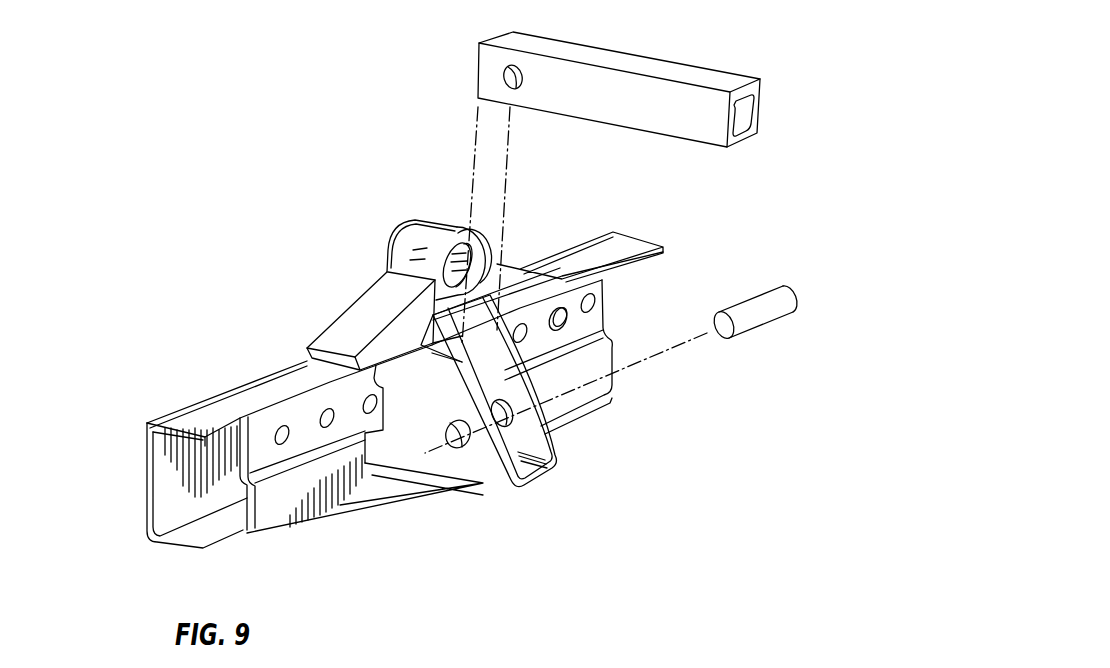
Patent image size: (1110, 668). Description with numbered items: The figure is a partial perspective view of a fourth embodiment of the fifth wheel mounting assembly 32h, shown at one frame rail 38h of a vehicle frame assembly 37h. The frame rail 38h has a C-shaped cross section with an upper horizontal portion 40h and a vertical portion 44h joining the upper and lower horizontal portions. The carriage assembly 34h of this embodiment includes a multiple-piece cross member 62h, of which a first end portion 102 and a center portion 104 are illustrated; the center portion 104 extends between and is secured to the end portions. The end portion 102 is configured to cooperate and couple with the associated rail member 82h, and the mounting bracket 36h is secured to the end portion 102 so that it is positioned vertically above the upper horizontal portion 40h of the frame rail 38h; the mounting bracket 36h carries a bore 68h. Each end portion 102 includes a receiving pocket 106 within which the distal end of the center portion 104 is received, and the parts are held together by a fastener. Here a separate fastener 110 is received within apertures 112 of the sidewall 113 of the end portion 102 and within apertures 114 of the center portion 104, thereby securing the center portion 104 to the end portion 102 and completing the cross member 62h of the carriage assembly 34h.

The fifth wheel mounting assembly 32h is at (270, 245).
The carriage assembly 34h is at (452, 462).
The mounting bracket 36h is at (440, 271).
The vehicle frame assembly 37h is at (203, 386).
The frame rail 38h is at (365, 425).
The upper horizontal portion 40h is at (197, 412).
The vertical portion 44h is at (172, 473).
The cross member 62h is at (488, 495).
The pivot bore 68h is at (475, 264).
The rail member 82h is at (297, 524).
The end portion 102 is at (430, 493).
The center portion 104 is at (582, 172).
The receiving pocket 106 is at (523, 427).
The fastener 110 is at (743, 300).
The apertures 112 is at (455, 443).
The sidewall 113 is at (419, 465).
The apertures 114 is at (503, 78).